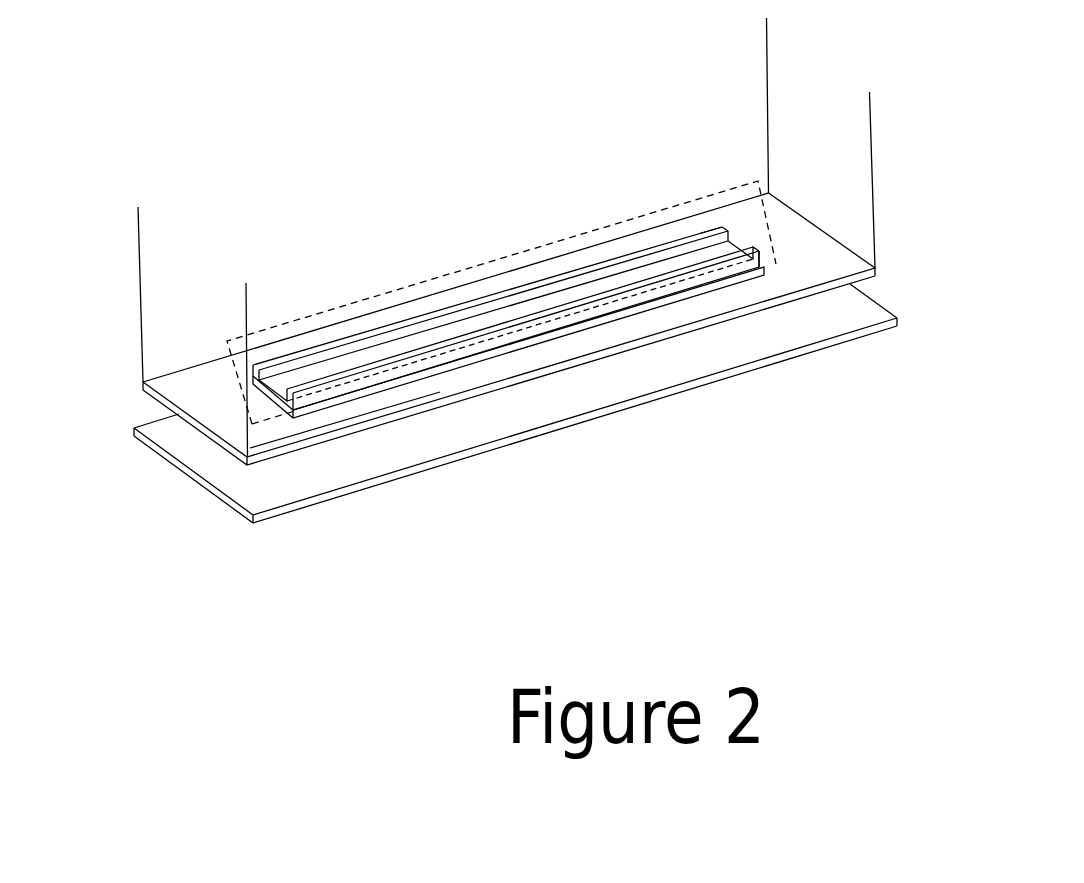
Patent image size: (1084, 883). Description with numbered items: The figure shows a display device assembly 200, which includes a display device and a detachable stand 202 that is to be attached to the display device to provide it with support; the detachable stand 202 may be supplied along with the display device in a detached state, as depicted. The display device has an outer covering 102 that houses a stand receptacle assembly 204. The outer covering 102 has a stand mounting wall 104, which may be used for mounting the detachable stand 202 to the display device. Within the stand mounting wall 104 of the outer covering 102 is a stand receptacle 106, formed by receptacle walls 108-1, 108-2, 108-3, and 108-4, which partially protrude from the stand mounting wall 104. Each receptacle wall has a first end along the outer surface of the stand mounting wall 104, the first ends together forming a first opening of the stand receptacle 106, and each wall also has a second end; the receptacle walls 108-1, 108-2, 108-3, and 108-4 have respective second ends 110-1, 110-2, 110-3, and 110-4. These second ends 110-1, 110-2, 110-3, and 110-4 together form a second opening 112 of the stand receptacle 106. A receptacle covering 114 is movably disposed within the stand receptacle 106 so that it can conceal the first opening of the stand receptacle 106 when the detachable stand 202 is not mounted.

The display device assembly 200 is at (456, 66).
The outer covering 102 is at (140, 272).
The stand mounting wall 104 is at (443, 387).
The stand receptacle 106 is at (528, 326).
The receptacle wall 108-1 is at (515, 292).
The receptacle wall 108-2 is at (338, 383).
The receptacle wall 108-3 is at (745, 240).
The receptacle wall 108-4 is at (285, 393).
The second end 110-1 is at (622, 252).
The second end 110-2 is at (592, 300).
The second end 110-3 is at (759, 252).
The second end 110-4 is at (268, 372).
The second opening 112 is at (725, 212).
The receptacle covering 114 is at (353, 362).
The detachable stand 202 is at (575, 383).
The stand receptacle assembly 204 is at (759, 208).